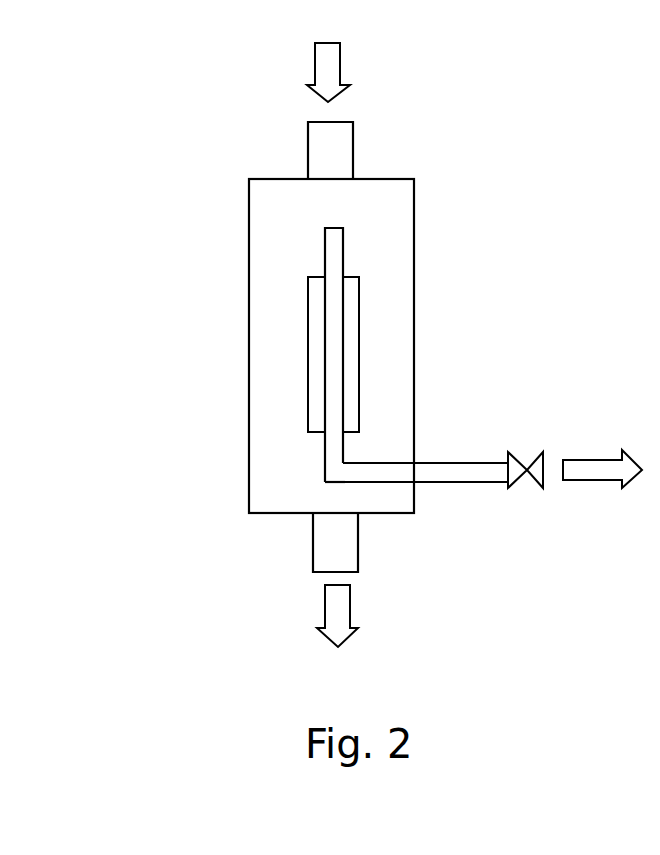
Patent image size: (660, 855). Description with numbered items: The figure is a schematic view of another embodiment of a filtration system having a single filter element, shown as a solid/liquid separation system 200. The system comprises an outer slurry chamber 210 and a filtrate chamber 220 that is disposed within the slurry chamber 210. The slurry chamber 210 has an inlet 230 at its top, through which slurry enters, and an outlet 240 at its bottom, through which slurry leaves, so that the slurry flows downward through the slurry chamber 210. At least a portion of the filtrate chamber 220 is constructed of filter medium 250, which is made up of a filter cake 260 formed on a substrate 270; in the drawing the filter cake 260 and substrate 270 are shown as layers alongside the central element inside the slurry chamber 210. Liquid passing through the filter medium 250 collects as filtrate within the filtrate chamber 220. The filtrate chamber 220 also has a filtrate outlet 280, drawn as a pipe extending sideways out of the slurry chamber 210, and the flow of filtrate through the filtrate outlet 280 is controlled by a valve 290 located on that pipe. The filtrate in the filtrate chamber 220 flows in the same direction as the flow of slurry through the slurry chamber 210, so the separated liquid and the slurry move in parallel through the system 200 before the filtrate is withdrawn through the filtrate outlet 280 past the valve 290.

The solid/liquid separation system 200 is at (452, 128).
The slurry chamber 210 is at (279, 176).
The filtrate chamber 220 is at (320, 459).
The inlet 230 is at (353, 137).
The outlet 240 is at (355, 555).
The filter medium 250 is at (327, 400).
The filter cake 260 is at (317, 348).
The substrate 270 is at (318, 293).
The filtrate outlet 280 is at (461, 462).
The valve 290 is at (543, 462).